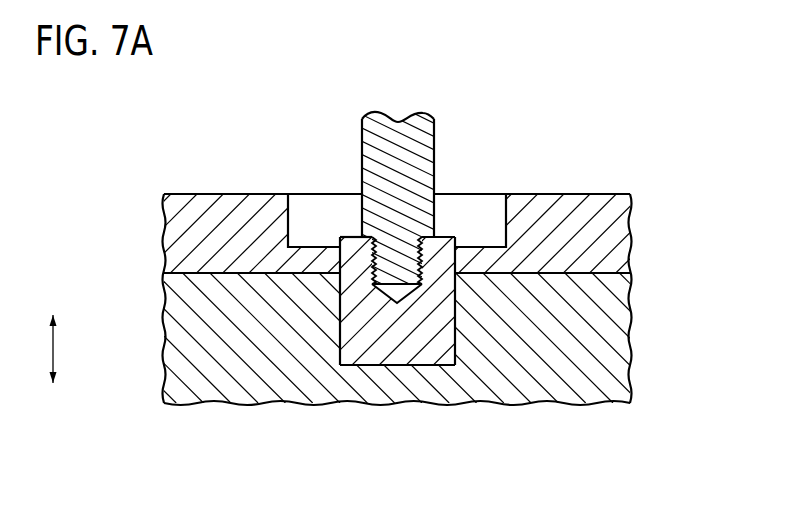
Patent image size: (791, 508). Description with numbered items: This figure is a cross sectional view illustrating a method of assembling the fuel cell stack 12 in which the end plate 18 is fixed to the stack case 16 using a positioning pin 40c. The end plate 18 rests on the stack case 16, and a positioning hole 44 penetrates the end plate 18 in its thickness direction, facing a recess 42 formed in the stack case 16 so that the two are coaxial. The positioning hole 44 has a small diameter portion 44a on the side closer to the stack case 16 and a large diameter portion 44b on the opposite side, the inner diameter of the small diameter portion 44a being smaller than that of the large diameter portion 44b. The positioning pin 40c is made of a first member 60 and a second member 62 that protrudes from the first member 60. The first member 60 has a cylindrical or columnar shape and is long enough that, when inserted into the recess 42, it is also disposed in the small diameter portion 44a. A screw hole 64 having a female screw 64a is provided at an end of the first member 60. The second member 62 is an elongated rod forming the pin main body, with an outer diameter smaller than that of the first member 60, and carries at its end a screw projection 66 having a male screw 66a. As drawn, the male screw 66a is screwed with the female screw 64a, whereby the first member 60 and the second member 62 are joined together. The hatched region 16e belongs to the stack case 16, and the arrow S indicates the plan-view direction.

The fuel cell stack 12 is at (217, 162).
The stack case 16 is at (632, 364).
The base member body portion 16e is at (598, 333).
The end plate 18 is at (566, 192).
The positioning pin 40c is at (360, 117).
The recess 42 is at (340, 337).
The positioning hole 44 is at (309, 193).
The small diameter portion 44a is at (445, 236).
The large diameter portion 44b is at (291, 222).
The first member 60 is at (421, 348).
The second member 62 is at (403, 153).
The screw hole 64 is at (404, 250).
The female screw 64a is at (397, 260).
The screw projection 66 is at (395, 263).
The male screw 66a is at (446, 237).